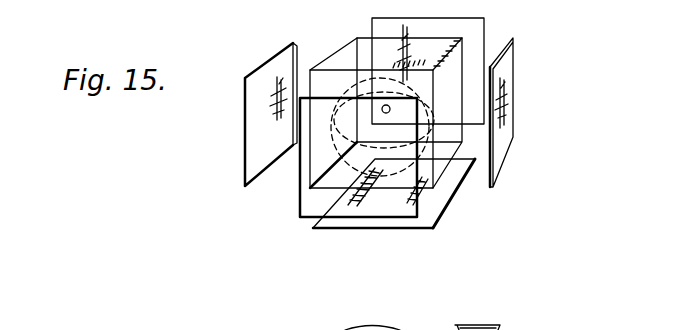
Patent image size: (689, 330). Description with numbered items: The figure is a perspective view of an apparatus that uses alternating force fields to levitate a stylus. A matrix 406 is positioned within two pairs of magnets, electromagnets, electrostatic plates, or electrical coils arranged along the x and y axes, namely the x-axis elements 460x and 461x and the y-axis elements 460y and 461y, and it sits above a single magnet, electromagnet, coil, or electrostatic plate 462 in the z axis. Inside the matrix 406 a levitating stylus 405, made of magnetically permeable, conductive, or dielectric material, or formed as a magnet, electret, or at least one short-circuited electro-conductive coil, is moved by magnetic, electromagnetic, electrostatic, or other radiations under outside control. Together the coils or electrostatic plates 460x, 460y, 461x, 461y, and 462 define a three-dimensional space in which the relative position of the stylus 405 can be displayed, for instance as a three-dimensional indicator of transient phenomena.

The levitating stylus 405 is at (383, 113).
The matrix 406 is at (327, 60).
The x-axis magnet, electromagnet, coil, or electrostatic plate 460x is at (245, 138).
The y-axis magnet, electromagnet, coil, or electrostatic plate 460y is at (505, 143).
The x-axis magnet, electromagnet, coil, or electrostatic plate 461x is at (300, 186).
The y-axis magnet, electromagnet, coil, or electrostatic plate 461y is at (485, 25).
The z-axis magnet, electromagnet, coil, or electrostatic plate 462 is at (441, 219).